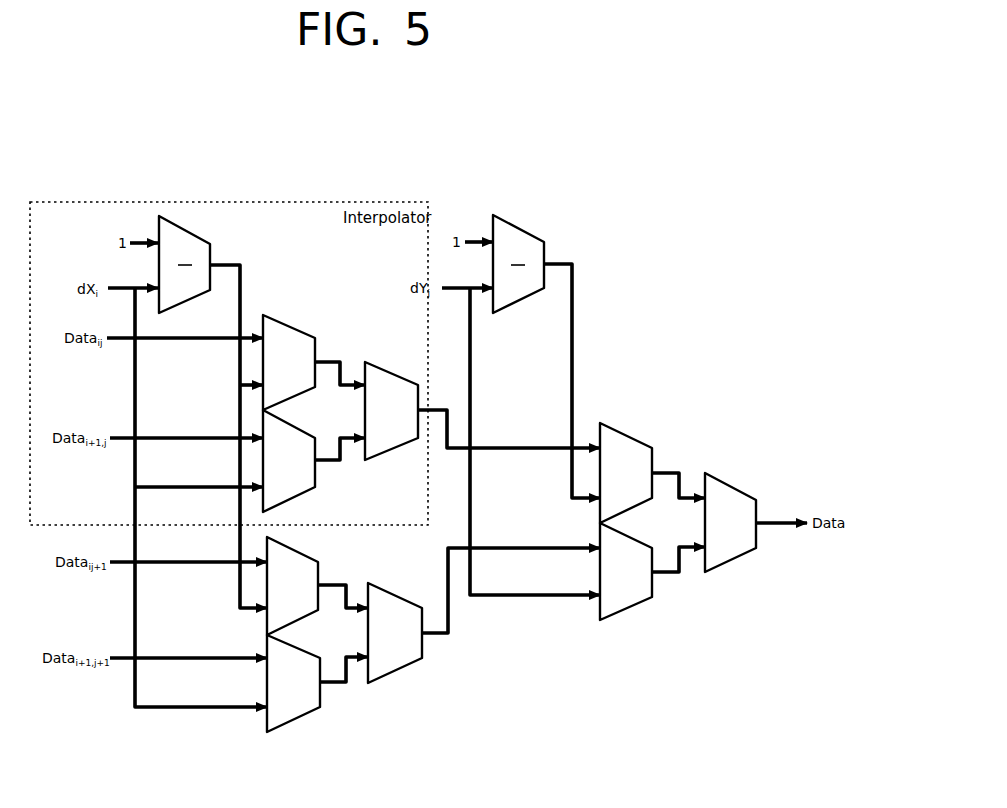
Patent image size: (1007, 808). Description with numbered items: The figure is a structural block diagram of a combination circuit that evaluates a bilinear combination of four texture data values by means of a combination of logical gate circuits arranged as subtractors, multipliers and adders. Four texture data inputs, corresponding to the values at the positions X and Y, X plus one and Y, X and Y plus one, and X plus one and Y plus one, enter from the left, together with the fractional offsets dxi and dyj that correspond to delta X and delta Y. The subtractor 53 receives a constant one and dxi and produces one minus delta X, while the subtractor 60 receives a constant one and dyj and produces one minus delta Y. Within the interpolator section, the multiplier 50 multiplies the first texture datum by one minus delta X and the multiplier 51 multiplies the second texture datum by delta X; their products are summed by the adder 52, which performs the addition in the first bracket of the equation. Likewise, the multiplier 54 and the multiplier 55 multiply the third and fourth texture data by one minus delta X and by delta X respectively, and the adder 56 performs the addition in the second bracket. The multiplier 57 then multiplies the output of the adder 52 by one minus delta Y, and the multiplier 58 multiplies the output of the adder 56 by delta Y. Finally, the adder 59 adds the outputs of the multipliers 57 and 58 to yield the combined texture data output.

The multiplier 50 is at (290, 316).
The multiplier 51 is at (300, 495).
The adder 52 is at (386, 455).
The subtractor 53 is at (200, 231).
The multiplier 54 is at (305, 547).
The multiplier 55 is at (310, 714).
The adder 56 is at (405, 668).
The multiplier 57 is at (625, 432).
The multiplier 58 is at (632, 606).
The adder 59 is at (730, 563).
The subtractor 60 is at (534, 226).